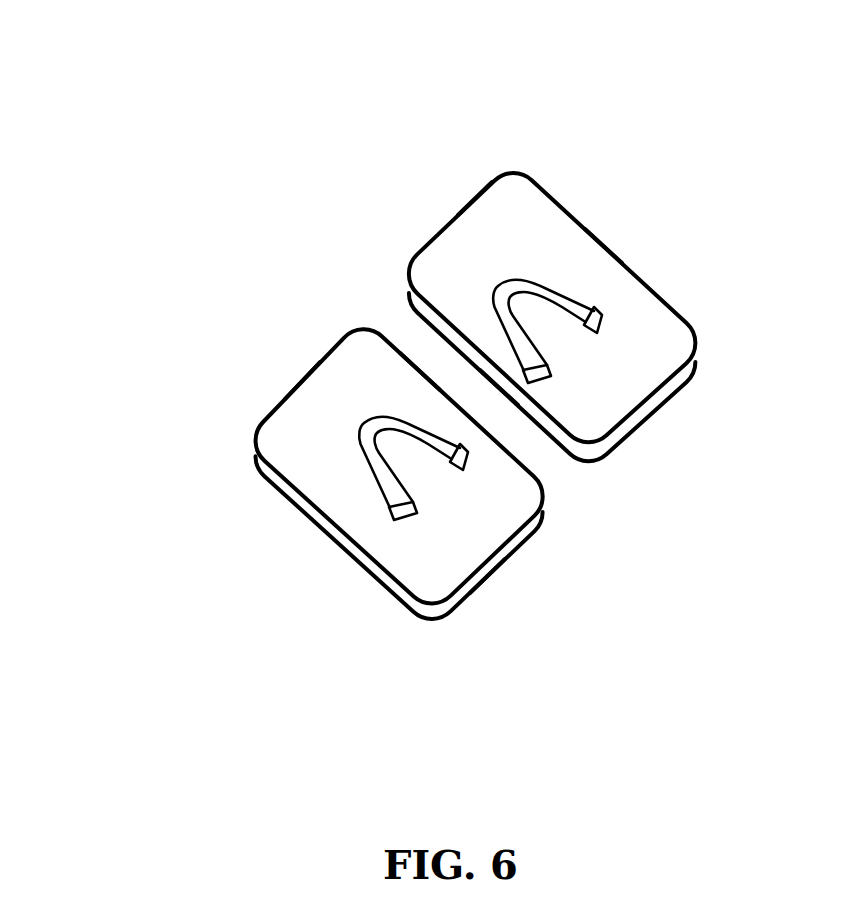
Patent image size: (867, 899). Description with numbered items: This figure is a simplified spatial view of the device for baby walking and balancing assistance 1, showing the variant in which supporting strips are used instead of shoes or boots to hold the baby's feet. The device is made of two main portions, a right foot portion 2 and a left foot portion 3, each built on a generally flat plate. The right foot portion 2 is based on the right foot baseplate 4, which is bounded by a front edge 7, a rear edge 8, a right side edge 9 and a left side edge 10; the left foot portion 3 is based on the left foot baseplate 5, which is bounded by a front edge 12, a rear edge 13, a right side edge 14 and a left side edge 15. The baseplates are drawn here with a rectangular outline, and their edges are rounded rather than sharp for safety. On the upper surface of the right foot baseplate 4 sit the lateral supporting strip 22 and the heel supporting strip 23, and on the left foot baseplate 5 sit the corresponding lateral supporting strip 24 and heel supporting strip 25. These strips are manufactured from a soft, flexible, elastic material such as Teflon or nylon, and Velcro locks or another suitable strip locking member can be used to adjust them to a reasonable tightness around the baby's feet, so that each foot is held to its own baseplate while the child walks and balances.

The device for baby walking and balancing assistance 1 is at (324, 192).
The right foot portion 2 is at (212, 352).
The left foot portion 3 is at (442, 99).
The right foot baseplate 4 is at (360, 347).
The left foot baseplate 5 is at (455, 246).
The front edge 7 is at (483, 570).
The rear edge 8 is at (300, 380).
The right side edge 9 is at (354, 557).
The left side edge 10 is at (410, 363).
The front edge 12 is at (637, 407).
The rear edge 13 is at (470, 182).
The right side edge 14 is at (500, 383).
The left side edge 15 is at (606, 240).
The lateral supporting strip 22 is at (430, 472).
The heel supporting strip 23 is at (371, 460).
The lateral supporting strip 24 is at (563, 337).
The heel supporting strip 25 is at (550, 283).